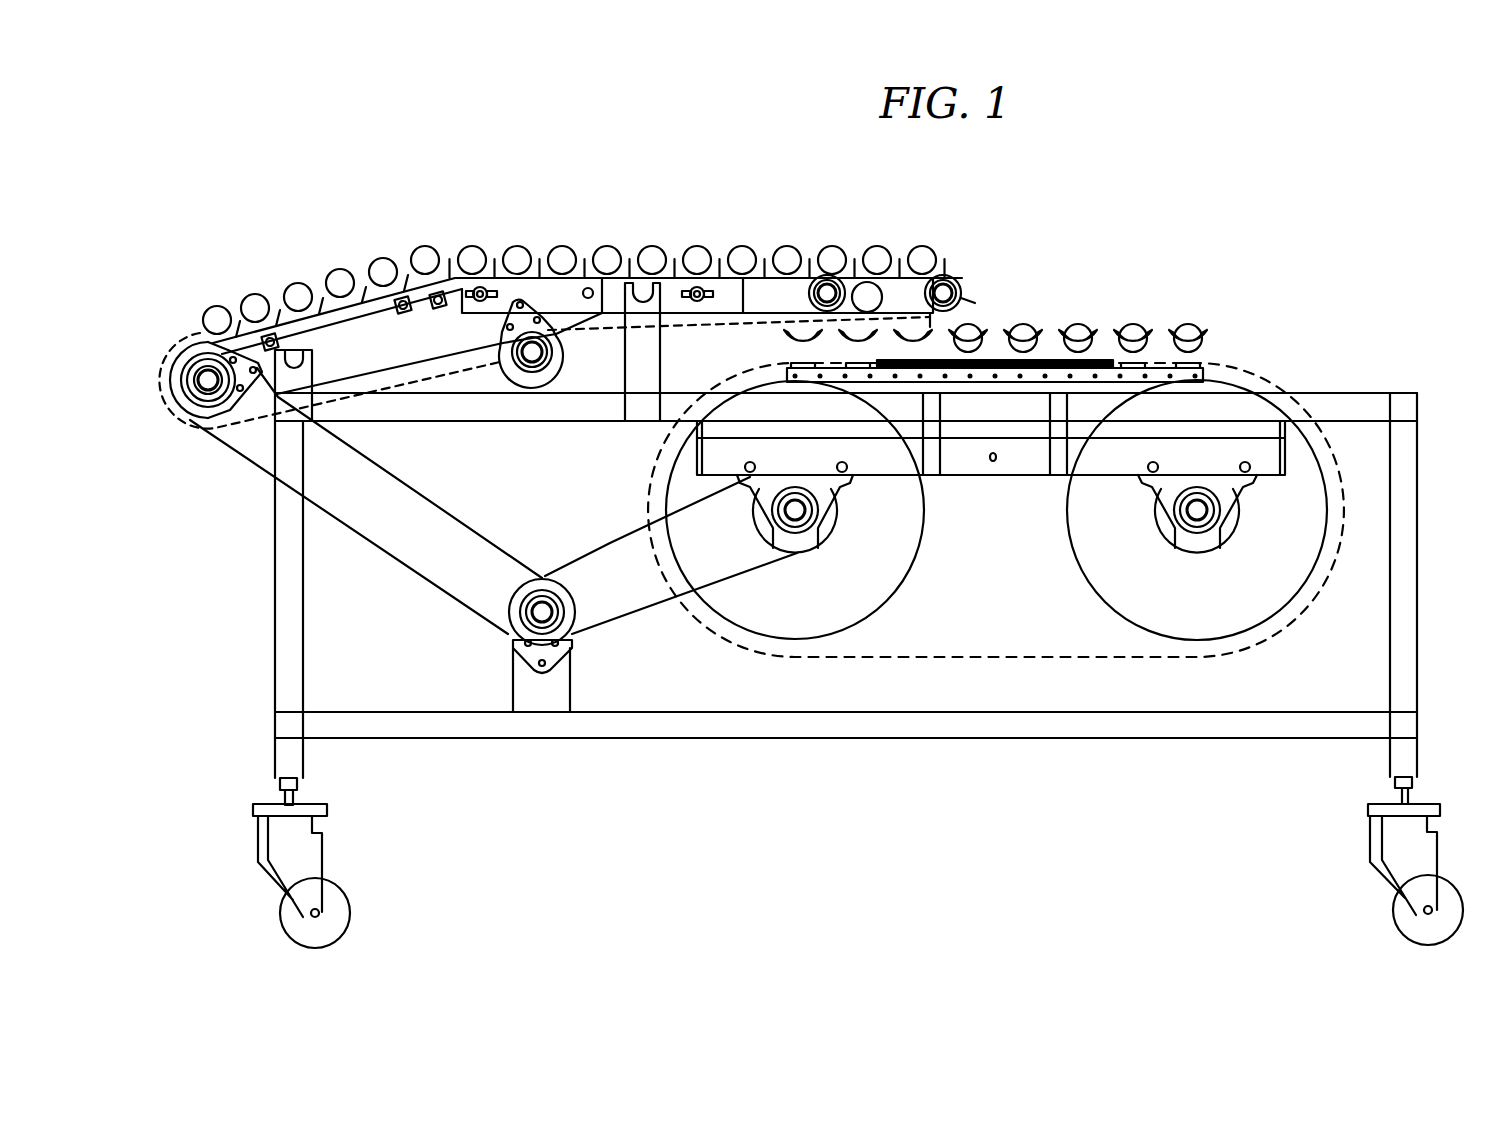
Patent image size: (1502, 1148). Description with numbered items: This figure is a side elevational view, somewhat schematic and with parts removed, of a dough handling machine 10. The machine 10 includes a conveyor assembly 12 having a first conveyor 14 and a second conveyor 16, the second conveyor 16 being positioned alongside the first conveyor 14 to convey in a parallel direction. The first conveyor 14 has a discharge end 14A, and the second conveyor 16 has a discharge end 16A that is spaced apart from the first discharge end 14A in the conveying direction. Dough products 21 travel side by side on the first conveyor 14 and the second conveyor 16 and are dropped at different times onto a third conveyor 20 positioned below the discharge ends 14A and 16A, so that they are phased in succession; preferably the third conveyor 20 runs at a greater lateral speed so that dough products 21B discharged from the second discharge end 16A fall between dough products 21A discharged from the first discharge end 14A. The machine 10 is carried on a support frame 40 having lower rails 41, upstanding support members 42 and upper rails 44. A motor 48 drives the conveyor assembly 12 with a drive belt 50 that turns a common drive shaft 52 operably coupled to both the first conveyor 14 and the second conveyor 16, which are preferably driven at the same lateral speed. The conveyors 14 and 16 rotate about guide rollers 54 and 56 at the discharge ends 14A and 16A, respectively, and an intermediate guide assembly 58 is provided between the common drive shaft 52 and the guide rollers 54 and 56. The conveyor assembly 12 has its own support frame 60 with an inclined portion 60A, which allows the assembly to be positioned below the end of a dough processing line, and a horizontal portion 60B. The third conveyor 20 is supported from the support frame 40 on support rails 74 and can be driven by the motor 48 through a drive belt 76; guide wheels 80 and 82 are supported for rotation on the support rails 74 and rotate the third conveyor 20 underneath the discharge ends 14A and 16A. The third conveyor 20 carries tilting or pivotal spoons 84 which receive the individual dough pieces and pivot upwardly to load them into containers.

The dough handling machine 10 is at (1432, 462).
The conveyor assembly 12 is at (1005, 287).
The first conveyor 14 is at (808, 297).
The discharge end 14A is at (852, 284).
The second conveyor 16 is at (943, 275).
The discharge end 16A is at (985, 262).
The third conveyor 20 is at (1333, 332).
The dough products 21 is at (728, 228).
The dough products 21A is at (1186, 325).
The dough products 21B is at (1130, 326).
The support frame 40 is at (1432, 595).
The lower rails 41 is at (760, 738).
The upstanding support members 42 is at (275, 588).
The upper rails 44 is at (480, 422).
The motor 48 is at (500, 620).
The drive belt 50 is at (370, 537).
The common drive shaft 52 is at (190, 416).
The guide roller 54 is at (768, 277).
The guide roller 56 is at (975, 303).
The intermediate guide assembly 58 is at (558, 357).
The support frame 60 is at (406, 403).
The inclined portion 60A is at (333, 330).
The horizontal portion 60B is at (538, 287).
The support rails 74 is at (990, 476).
The drive belt 76 is at (635, 612).
The guide wheel 80 is at (1280, 610).
The guide wheel 82 is at (877, 610).
The spoons 84 is at (1210, 345).